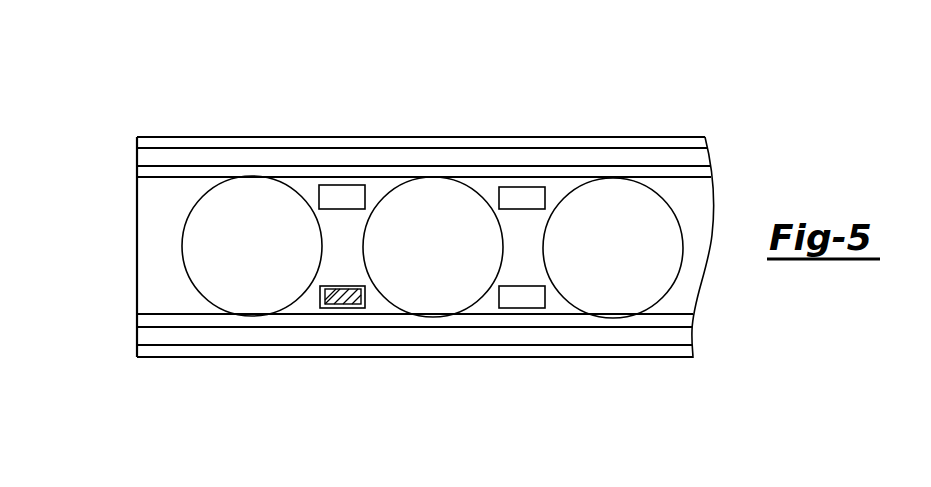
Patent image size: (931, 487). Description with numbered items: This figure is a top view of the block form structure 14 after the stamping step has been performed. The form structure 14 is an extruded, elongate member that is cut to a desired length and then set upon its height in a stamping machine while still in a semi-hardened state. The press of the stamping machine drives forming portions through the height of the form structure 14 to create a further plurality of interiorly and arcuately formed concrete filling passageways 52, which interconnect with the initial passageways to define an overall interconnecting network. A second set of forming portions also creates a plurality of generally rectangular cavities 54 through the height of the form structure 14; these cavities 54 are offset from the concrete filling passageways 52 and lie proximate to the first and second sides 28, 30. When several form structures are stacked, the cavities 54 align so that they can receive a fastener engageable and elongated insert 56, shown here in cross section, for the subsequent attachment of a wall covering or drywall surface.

The block form structure 14 is at (153, 224).
The first side 28 is at (137, 339).
The second side 30 is at (137, 152).
The concrete filling passageways 52 is at (267, 235).
The cavities 54 is at (340, 195).
The fastener engageable and elongated insert 56 is at (355, 307).